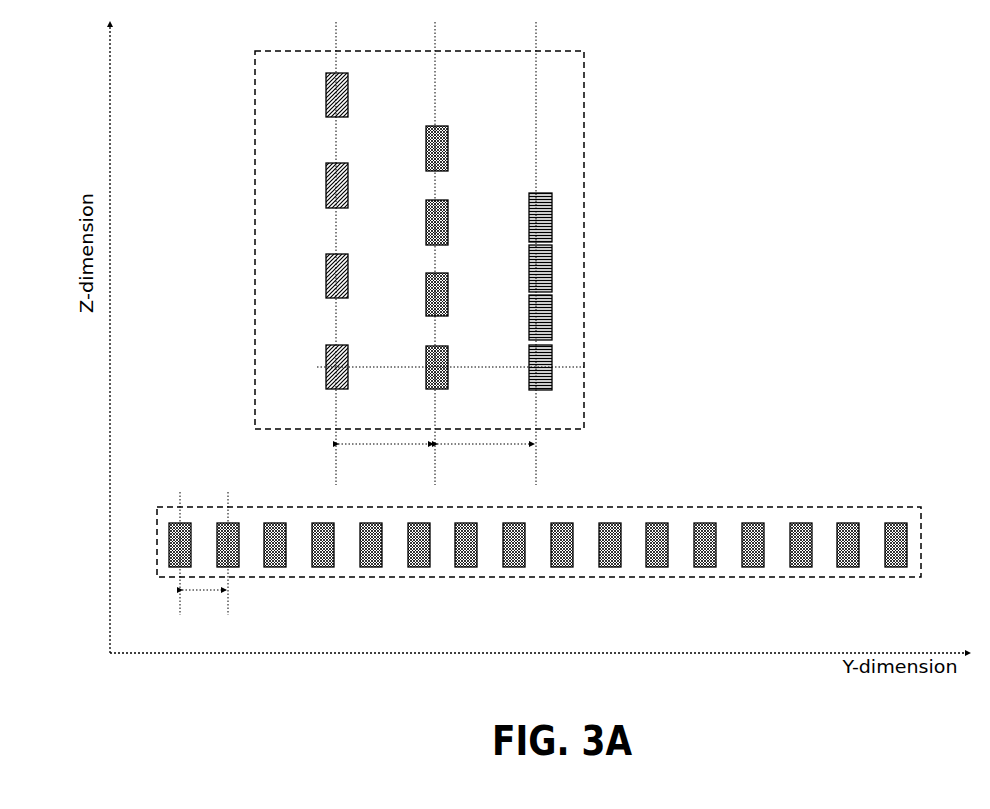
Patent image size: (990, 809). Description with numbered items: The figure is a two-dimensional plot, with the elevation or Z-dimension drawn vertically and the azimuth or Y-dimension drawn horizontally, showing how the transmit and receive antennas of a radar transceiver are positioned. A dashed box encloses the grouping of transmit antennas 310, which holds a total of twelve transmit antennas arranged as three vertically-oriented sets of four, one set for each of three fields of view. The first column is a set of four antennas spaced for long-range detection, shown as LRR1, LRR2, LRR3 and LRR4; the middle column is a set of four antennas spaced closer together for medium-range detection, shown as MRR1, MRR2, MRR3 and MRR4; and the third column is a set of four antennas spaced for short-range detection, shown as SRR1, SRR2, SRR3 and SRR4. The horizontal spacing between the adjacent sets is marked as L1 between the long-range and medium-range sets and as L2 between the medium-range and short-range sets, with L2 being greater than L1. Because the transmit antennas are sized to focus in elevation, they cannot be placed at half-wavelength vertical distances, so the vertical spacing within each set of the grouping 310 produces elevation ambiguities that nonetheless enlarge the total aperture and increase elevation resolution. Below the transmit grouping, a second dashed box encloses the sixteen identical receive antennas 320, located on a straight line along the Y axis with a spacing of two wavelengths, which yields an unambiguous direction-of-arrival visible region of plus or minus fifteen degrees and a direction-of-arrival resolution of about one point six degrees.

The grouping of transmit antennas 310 is at (467, 253).
The receive antennas 320 is at (900, 505).
The long-range transmit antenna LRR1 is at (322, 367).
The long-range transmit antenna LRR2 is at (322, 276).
The long-range transmit antenna LRR3 is at (322, 185).
The long-range transmit antenna LRR4 is at (322, 95).
The medium-range transmit antenna MRR1 is at (423, 367).
The medium-range transmit antenna MRR2 is at (423, 294).
The medium-range transmit antenna MRR3 is at (423, 222).
The medium-range transmit antenna MRR4 is at (423, 148).
The short-range transmit antenna SRR1 is at (526, 368).
The short-range transmit antenna SRR2 is at (526, 317).
The short-range transmit antenna SRR3 is at (526, 263).
The short-range transmit antenna SRR4 is at (526, 209).
The spacing between adjacent antenna sets L1 is at (385, 459).
The spacing between adjacent antenna sets L2 is at (485, 459).